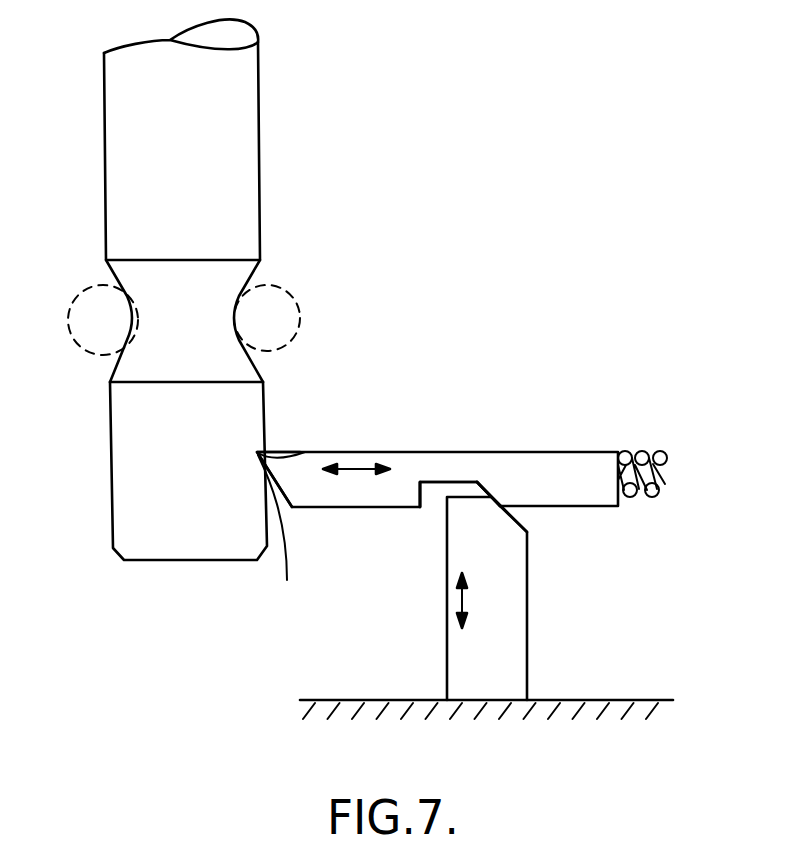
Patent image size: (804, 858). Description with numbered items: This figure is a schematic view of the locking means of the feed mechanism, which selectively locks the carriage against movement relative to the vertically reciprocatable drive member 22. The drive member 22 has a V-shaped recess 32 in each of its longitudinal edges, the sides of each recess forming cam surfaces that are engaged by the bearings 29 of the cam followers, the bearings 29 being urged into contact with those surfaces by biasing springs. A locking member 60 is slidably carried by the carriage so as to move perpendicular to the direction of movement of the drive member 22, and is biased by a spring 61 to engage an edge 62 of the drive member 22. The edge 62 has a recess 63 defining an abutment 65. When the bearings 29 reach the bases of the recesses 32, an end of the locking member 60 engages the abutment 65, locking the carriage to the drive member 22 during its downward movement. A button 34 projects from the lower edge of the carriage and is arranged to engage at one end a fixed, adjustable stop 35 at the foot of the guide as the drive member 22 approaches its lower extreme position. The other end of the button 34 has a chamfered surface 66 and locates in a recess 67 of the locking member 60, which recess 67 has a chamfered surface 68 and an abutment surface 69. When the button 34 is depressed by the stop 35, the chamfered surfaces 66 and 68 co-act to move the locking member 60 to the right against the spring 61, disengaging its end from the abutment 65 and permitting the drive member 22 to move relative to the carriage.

The drive member 22 is at (138, 487).
The V-shaped recess 32 is at (132, 316).
The bearing 29 is at (95, 330).
The locking member 60 is at (505, 468).
The edge 62 is at (290, 405).
The abutment 65 is at (300, 452).
The recess 63 is at (285, 536).
The recess 67 is at (437, 497).
The abutment surface 69 is at (424, 500).
The chamfered surface 68 is at (480, 488).
The button 34 is at (503, 613).
The chamfered surface 66 is at (512, 514).
The stop 35 is at (583, 697).
The spring 61 is at (641, 460).